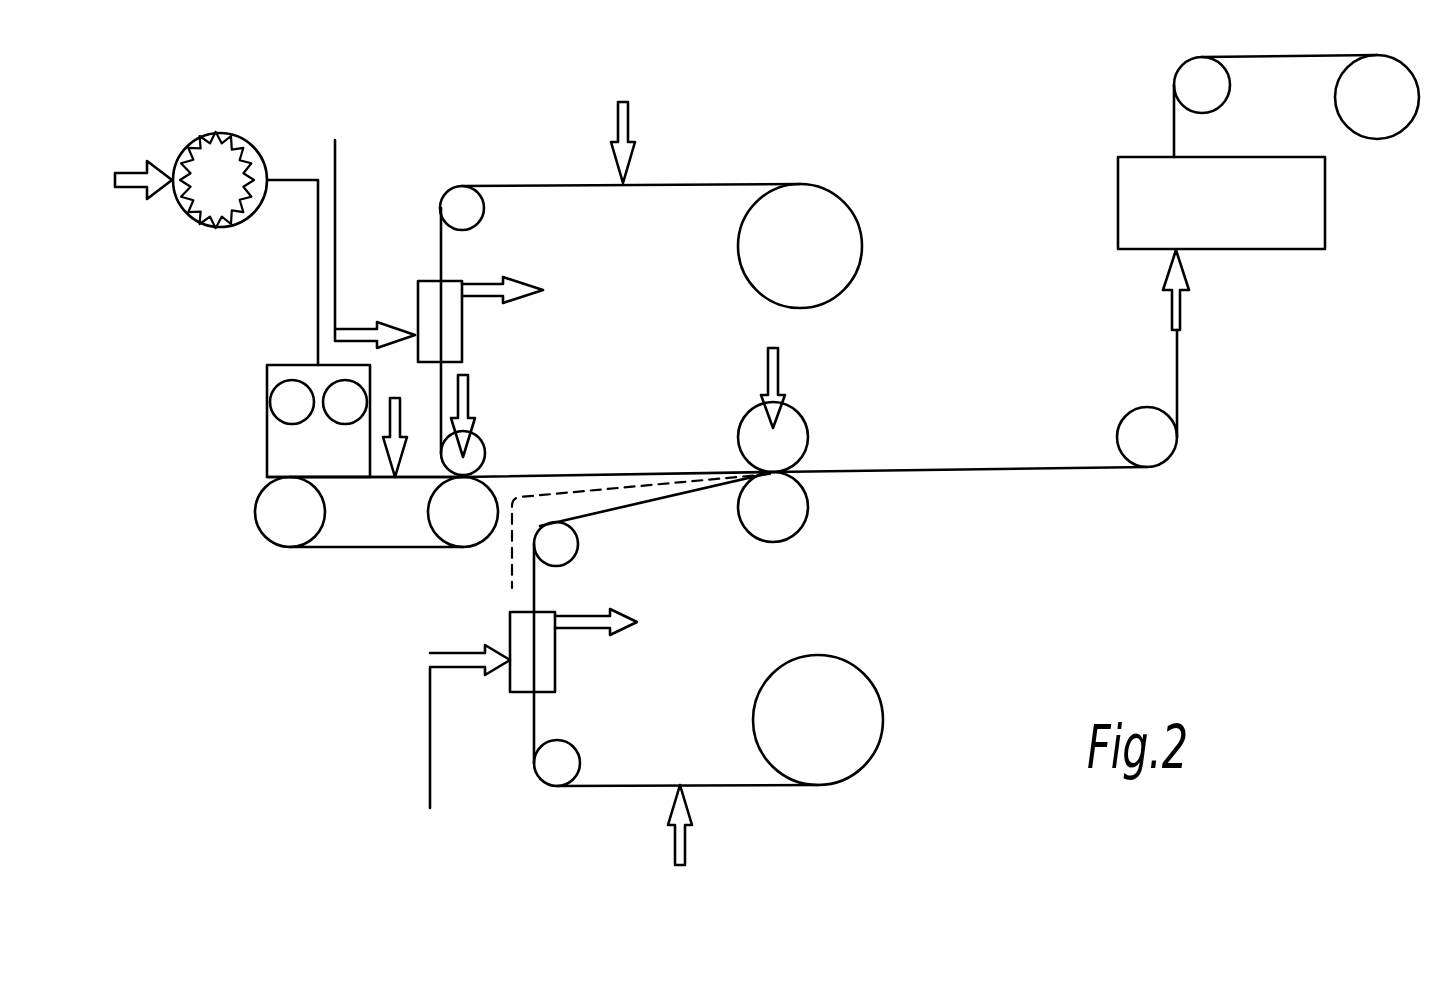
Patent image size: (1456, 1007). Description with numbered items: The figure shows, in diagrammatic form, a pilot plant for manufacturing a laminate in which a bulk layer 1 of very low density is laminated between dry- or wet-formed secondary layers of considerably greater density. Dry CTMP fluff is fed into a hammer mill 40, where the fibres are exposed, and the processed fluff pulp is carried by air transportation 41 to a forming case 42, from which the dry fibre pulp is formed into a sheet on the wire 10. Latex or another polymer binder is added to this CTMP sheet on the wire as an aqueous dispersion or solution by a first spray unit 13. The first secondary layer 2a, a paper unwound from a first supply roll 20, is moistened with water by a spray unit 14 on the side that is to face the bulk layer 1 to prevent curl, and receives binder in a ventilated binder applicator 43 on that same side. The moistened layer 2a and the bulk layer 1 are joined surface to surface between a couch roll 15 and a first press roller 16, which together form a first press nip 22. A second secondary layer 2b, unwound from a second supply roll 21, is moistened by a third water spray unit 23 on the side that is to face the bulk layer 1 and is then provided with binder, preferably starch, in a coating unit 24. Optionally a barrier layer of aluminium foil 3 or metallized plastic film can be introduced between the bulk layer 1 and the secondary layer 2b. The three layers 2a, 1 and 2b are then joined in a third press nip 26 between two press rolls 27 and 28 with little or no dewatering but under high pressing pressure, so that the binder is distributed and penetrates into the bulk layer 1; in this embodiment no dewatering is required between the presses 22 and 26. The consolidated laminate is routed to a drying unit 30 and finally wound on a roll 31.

The bulk layer 1 is at (612, 472).
The first secondary layer 2a is at (527, 183).
The second secondary layer 2b is at (607, 507).
The aluminium foil barrier layer 3 is at (677, 482).
The wire 10 is at (358, 548).
The first spray unit 13 is at (403, 422).
The spray unit 14 is at (630, 118).
The couch roll 15 is at (472, 547).
The first press roller 16 is at (487, 437).
The first supply roll 20 is at (842, 190).
The second supply roll 21 is at (883, 718).
The first press nip 22 is at (497, 458).
The third water spray unit 23 is at (673, 847).
The coating unit 24 is at (508, 678).
The third press nip 26 is at (730, 455).
The press roll 27 is at (808, 512).
The press roll 28 is at (808, 427).
The drying unit 30 is at (1118, 185).
The roll 31 is at (1407, 62).
The hammer mill 40 is at (218, 133).
The air transportation 41 is at (298, 176).
The forming case 42 is at (267, 437).
The ventilated binder applicator 43 is at (425, 281).